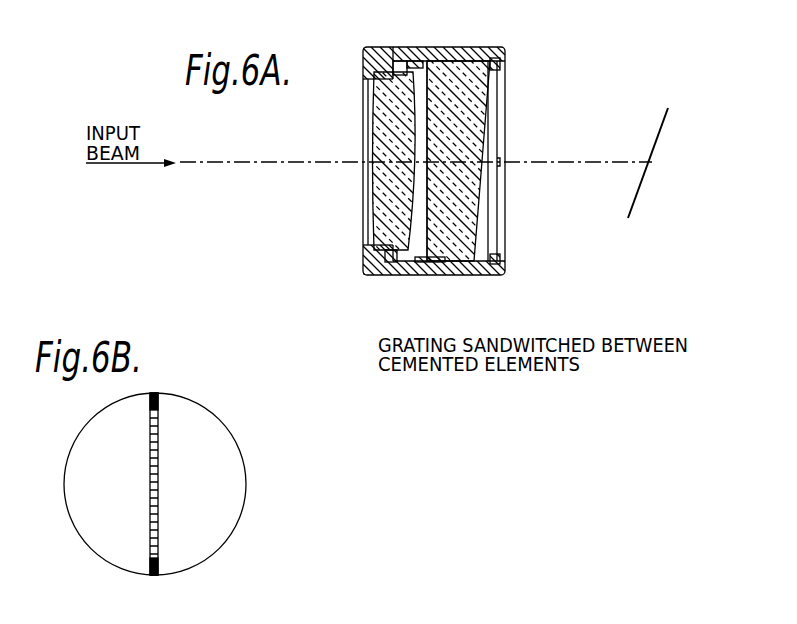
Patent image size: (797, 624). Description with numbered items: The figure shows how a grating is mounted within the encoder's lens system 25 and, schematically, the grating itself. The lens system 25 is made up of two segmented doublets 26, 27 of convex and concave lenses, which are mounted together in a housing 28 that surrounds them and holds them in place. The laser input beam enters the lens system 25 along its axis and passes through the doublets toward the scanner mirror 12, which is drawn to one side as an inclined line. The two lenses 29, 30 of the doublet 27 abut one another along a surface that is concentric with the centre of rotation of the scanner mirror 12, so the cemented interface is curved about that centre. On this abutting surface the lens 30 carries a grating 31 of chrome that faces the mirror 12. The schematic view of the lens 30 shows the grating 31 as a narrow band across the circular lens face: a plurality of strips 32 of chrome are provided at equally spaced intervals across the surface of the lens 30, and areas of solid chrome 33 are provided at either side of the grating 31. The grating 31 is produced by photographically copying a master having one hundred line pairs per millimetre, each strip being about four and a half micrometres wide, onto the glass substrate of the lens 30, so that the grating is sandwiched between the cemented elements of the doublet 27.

In FIG. 6A, the scanner mirror 12 is at (656, 150).
In FIG. 6A, the lens system 25 is at (516, 285).
In FIG. 6A, the segmented doublet 26 is at (384, 259).
In FIG. 6A, the segmented doublet 27 is at (476, 238).
In FIG. 6A, the housing 28 is at (438, 50).
In FIG. 6A, the lens 29 is at (440, 262).
In FIG. 6A, the lens 30 is at (472, 150).
In FIG. 6B, the lens 30 is at (232, 483).
In FIG. 6A, the grating 31 is at (470, 270).
In FIG. 6B, the grating 31 is at (153, 577).
In FIG. 6B, the strips of chrome 32 is at (150, 547).
In FIG. 6B, the areas of solid chrome 33 is at (158, 400).